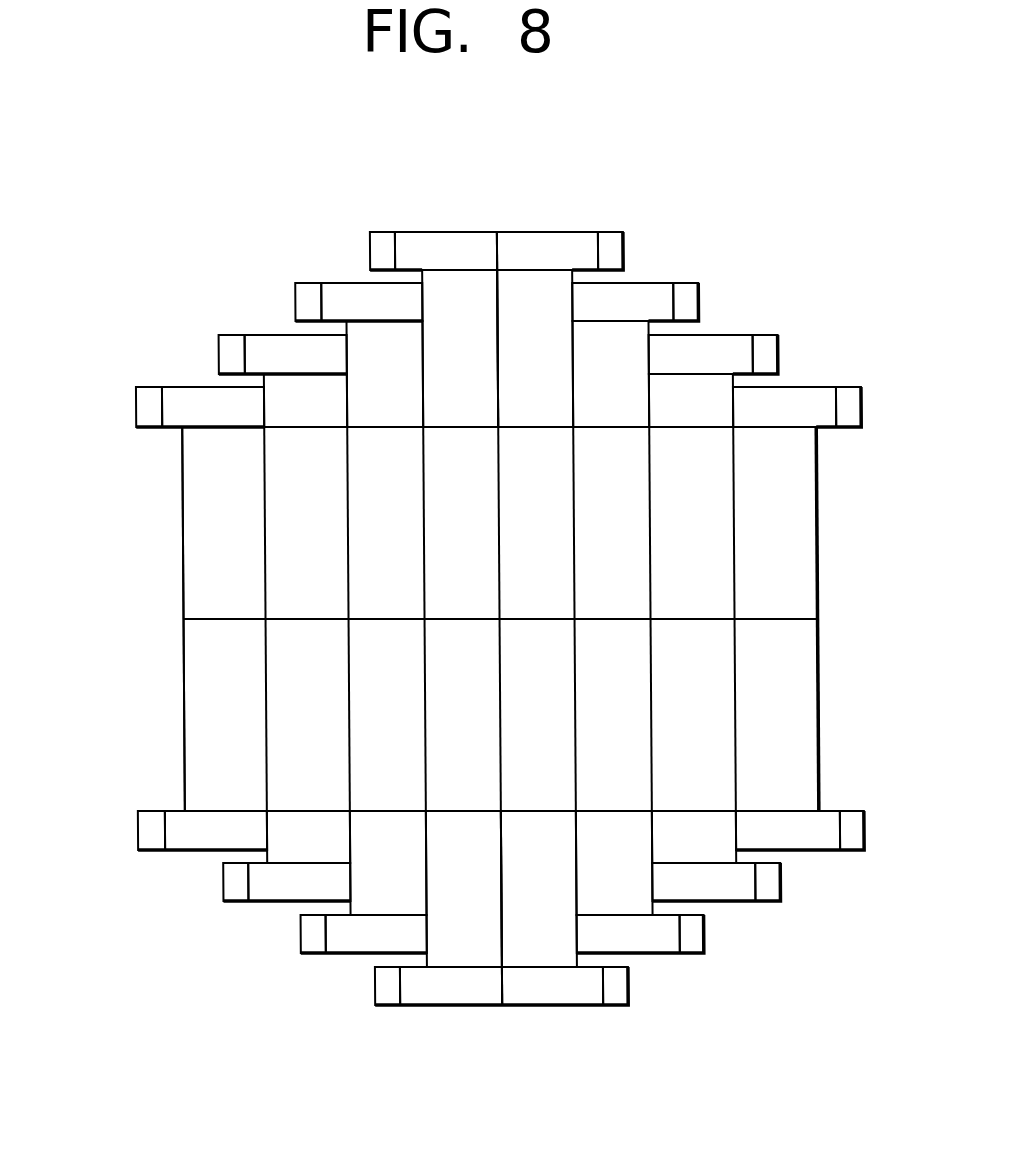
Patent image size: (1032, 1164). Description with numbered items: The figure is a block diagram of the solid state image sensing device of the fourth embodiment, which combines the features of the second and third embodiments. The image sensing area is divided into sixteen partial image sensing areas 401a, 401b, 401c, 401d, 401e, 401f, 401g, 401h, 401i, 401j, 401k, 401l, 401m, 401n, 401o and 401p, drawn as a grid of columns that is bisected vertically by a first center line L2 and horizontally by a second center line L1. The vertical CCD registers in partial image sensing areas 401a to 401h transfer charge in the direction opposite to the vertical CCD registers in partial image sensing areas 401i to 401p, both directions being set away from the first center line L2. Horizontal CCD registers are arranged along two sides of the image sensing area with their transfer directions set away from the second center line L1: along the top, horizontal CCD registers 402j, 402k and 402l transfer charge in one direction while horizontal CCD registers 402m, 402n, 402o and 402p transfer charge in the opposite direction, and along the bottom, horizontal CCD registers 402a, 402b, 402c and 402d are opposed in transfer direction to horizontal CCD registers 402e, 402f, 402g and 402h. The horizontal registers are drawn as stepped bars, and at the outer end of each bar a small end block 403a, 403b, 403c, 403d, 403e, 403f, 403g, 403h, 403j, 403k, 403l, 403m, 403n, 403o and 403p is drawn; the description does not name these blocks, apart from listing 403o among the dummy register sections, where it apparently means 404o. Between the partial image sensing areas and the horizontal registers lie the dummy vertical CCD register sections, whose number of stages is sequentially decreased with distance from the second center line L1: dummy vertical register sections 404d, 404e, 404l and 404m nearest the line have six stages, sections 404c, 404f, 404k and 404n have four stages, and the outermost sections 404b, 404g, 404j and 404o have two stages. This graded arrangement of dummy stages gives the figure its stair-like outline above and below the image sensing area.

The partial image sensing area 401a is at (200, 657).
The partial image sensing area 401b is at (283, 697).
The partial image sensing area 401c is at (367, 733).
The partial image sensing area 401d is at (432, 772).
The partial image sensing area 401e is at (555, 668).
The partial image sensing area 401f is at (630, 702).
The partial image sensing area 401g is at (715, 740).
The partial image sensing area 401h is at (793, 790).
The partial image sensing area 401i is at (200, 452).
The partial image sensing area 401j is at (283, 492).
The partial image sensing area 401k is at (367, 528).
The partial image sensing area 401l is at (430, 568).
The partial image sensing area 401m is at (555, 463).
The partial image sensing area 401n is at (630, 497).
The partial image sensing area 401o is at (715, 535).
The partial image sensing area 401p is at (793, 585).
The horizontal CCD register 402a is at (183, 850).
The horizontal CCD register 402b is at (258, 898).
The horizontal CCD register 402c is at (333, 952).
The horizontal CCD register 402d is at (425, 1000).
The horizontal CCD register 402e is at (583, 988).
The horizontal CCD register 402f is at (647, 942).
The horizontal CCD register 402g is at (728, 888).
The horizontal CCD register 402h is at (820, 837).
The horizontal CCD register 402j is at (283, 350).
The horizontal CCD register 402k is at (352, 292).
The horizontal CCD register 402l is at (458, 248).
The horizontal CCD register 402m is at (546, 245).
The horizontal CCD register 402n is at (642, 290).
The horizontal CCD register 402o is at (740, 350).
The horizontal CCD register 402p is at (817, 397).
The terminal pad 403a is at (150, 834).
The terminal pad 403b is at (236, 892).
The terminal pad 403c is at (310, 945).
The terminal pad 403d is at (387, 990).
The terminal pad 403e is at (613, 995).
The terminal pad 403f is at (697, 947).
The terminal pad 403g is at (772, 900).
The terminal pad 403h is at (862, 838).
The terminal pad 403j is at (232, 348).
The terminal pad 403k is at (308, 296).
The terminal pad 403l is at (384, 250).
The terminal pad 403m is at (605, 243).
The terminal pad 403n is at (688, 292).
The dummy vertical CCD register section 403o is at (762, 347).
The terminal pad 403p is at (845, 400).
The dummy vertical CCD register section 404b is at (308, 837).
The dummy vertical CCD register section 404c is at (388, 863).
The dummy vertical CCD register section 404d is at (464, 889).
The dummy vertical CCD register section 404e is at (539, 889).
The dummy vertical CCD register section 404f is at (614, 863).
The dummy vertical CCD register section 404g is at (694, 837).
The dummy vertical CCD register section 404j is at (305, 400).
The dummy vertical CCD register section 404k is at (384, 374).
The dummy vertical CCD register section 404l is at (460, 348).
The dummy vertical CCD register section 404m is at (536, 348).
The dummy vertical CCD register section 404n is at (610, 374).
The dummy vertical CCD register section 404o is at (691, 400).
The second center line L1 is at (498, 539).
The first center line L2 is at (457, 621).